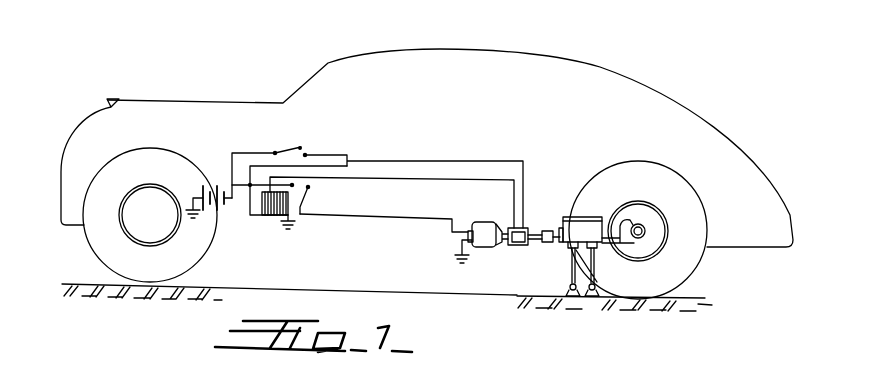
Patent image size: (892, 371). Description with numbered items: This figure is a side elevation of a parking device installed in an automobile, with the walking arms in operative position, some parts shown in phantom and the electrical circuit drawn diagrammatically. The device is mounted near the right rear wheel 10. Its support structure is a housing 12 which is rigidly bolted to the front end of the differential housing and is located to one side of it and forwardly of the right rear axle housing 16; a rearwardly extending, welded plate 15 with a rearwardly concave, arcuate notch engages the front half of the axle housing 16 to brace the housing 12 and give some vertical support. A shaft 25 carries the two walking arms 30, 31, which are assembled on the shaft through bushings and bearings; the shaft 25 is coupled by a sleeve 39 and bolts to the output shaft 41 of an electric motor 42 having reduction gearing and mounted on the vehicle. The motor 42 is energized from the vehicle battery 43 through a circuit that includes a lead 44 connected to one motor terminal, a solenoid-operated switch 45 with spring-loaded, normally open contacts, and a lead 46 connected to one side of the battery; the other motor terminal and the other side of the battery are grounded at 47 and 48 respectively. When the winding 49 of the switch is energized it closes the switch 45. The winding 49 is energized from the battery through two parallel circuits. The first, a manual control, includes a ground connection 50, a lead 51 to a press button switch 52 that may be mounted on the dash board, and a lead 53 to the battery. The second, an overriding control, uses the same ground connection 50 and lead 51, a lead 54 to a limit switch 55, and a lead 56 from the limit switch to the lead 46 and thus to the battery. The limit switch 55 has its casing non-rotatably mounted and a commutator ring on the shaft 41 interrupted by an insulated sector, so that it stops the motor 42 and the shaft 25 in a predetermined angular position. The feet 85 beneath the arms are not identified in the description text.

The right rear wheel 10 is at (700, 261).
The housing 12 is at (586, 216).
The welded plate 15 is at (626, 213).
The right rear axle housing 16 is at (645, 227).
The shaft 25 is at (561, 227).
The arm 30 is at (571, 268).
The arm 31 is at (597, 268).
The sleeve 39 is at (555, 243).
The output shaft 41 is at (546, 231).
The electric motor 42 is at (501, 247).
The vehicle battery 43 is at (206, 186).
The lead 44 is at (410, 214).
The solenoid-operated switch 45 is at (310, 193).
The lead 46 is at (242, 190).
The ground connection 47 is at (458, 249).
The ground connection 48 is at (192, 200).
The winding 49 is at (272, 216).
The ground connection 50 is at (296, 222).
The lead 51 is at (348, 163).
The press button switch 52 is at (291, 150).
The lead 53 is at (231, 157).
The lead 54 is at (464, 160).
The limit switch 55 is at (514, 246).
The lead 56 is at (458, 181).
The foot pad 85 is at (566, 287).